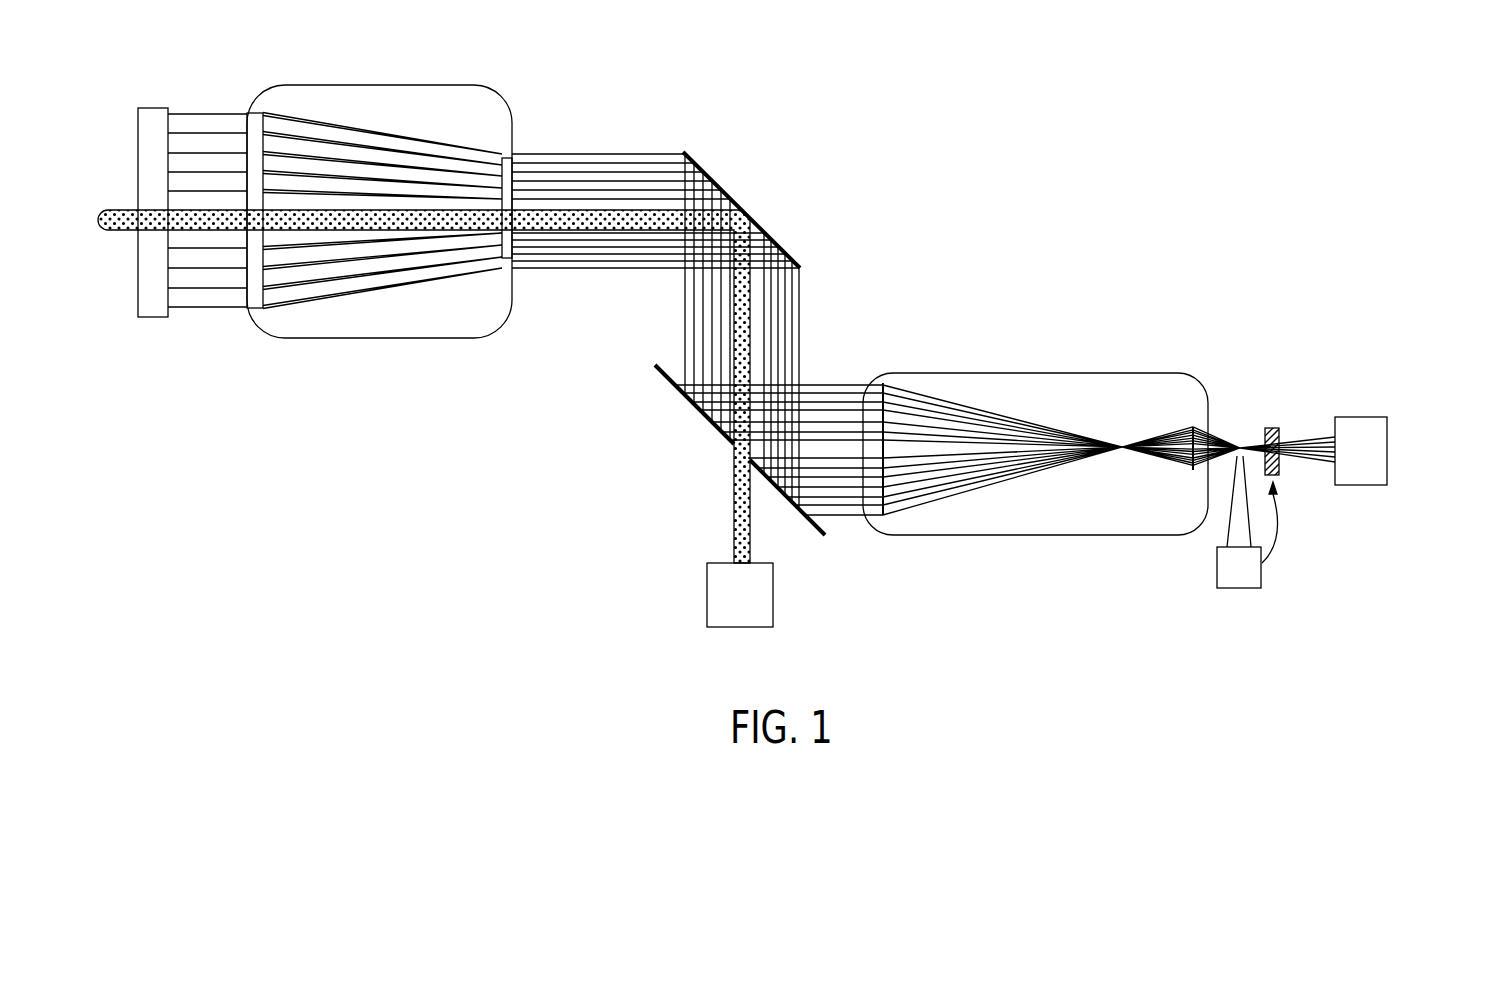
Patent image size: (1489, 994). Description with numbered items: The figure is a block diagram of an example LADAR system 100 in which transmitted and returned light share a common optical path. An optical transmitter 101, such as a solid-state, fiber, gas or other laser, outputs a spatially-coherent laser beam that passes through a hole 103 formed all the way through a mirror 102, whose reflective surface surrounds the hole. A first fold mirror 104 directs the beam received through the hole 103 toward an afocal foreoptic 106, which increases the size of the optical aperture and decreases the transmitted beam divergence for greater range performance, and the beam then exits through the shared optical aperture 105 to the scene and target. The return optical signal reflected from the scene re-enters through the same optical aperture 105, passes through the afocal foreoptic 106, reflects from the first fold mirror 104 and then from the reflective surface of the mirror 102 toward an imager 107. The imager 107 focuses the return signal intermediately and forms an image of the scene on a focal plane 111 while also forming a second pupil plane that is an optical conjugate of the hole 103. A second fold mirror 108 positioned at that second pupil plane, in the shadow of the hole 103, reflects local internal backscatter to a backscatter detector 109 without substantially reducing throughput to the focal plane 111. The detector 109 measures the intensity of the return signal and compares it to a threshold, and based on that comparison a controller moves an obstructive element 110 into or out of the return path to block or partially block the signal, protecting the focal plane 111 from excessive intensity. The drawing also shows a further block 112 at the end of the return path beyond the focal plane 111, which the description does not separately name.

The LADAR system 100 is at (385, 637).
The optical transmitter 101 is at (707, 592).
The mirror 102 is at (666, 414).
The hole 103 is at (709, 456).
The first fold mirror 104 is at (756, 182).
The optical aperture 105 is at (153, 318).
The afocal foreoptic 106 is at (398, 85).
The imager 107 is at (995, 373).
The second fold mirror 108 is at (1240, 408).
The backscatter detector 109 is at (1238, 588).
The obstructive element 110 is at (1272, 426).
The focal plane 111 is at (1328, 476).
The detector 112 is at (1401, 459).